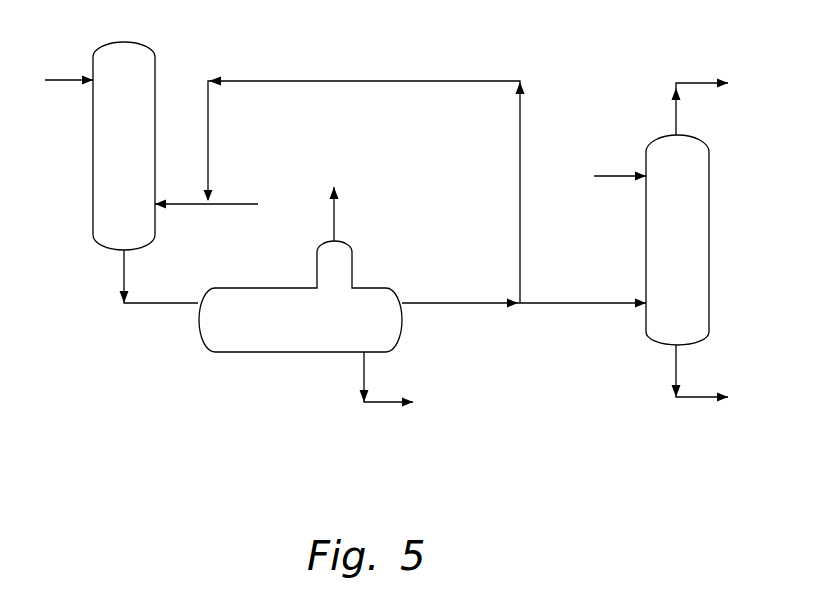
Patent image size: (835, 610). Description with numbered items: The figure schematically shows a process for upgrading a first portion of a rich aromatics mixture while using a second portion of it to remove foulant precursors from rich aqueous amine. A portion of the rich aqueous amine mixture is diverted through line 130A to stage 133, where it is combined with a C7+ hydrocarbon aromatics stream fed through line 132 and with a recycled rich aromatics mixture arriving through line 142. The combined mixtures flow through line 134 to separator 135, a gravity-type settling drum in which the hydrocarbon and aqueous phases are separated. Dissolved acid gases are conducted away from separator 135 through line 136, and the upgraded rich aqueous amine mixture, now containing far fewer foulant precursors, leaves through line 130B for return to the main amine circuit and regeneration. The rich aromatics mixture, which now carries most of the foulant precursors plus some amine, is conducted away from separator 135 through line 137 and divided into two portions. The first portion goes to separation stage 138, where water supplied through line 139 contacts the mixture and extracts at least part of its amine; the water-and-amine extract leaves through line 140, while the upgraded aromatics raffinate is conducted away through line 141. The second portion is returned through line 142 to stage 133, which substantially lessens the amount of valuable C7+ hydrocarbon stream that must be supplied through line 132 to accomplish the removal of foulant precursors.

The line 130A is at (58, 77).
The line 130B is at (378, 405).
The line 132 is at (243, 200).
The stage 133 is at (92, 161).
The line 134 is at (120, 270).
The separator 135 is at (252, 355).
The line 136 is at (337, 219).
The line 137 is at (418, 298).
The separation stage 138 is at (711, 212).
The line 139 is at (608, 172).
The line 140 is at (681, 363).
The line 141 is at (693, 80).
The line 142 is at (358, 78).